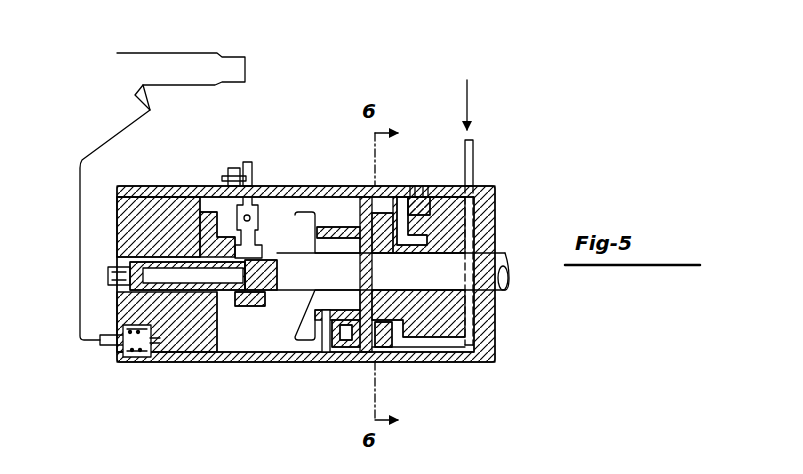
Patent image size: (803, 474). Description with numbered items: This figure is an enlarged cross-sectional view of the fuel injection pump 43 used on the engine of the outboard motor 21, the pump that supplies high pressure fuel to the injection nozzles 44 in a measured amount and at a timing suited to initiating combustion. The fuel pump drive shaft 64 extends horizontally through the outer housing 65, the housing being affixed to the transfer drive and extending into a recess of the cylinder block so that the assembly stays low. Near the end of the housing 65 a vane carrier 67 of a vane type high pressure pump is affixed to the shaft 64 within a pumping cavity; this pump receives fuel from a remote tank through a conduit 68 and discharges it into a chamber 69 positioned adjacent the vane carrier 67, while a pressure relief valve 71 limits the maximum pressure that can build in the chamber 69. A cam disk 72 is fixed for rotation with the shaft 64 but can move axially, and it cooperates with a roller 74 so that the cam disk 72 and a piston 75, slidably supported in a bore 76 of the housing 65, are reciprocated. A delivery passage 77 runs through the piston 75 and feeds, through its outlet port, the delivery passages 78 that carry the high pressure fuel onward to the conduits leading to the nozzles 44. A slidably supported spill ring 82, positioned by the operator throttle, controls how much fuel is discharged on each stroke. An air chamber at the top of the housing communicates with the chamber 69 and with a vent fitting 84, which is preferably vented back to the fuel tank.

The outboard motor 21 is at (147, 357).
The fuel injection pump 43 is at (331, 183).
The injection nozzles 44 is at (187, 60).
The fuel pump drive shaft 64 is at (507, 275).
The outer housing 65 is at (490, 208).
The vane carrier 67 is at (383, 350).
The conduit 68 is at (475, 152).
The chamber 69 is at (278, 197).
The pressure relief valve 71 is at (418, 186).
The cam disk 72 is at (300, 362).
The roller 74 is at (342, 352).
The piston 75 is at (180, 212).
The bore 76 is at (110, 270).
The delivery passage 77 is at (145, 302).
The delivery passages 78 is at (183, 352).
The spill ring 82 is at (250, 306).
The vent fitting 84 is at (240, 168).